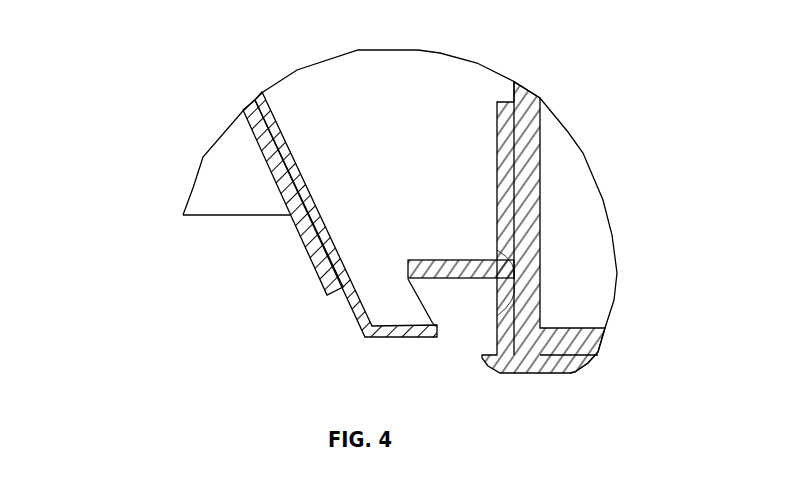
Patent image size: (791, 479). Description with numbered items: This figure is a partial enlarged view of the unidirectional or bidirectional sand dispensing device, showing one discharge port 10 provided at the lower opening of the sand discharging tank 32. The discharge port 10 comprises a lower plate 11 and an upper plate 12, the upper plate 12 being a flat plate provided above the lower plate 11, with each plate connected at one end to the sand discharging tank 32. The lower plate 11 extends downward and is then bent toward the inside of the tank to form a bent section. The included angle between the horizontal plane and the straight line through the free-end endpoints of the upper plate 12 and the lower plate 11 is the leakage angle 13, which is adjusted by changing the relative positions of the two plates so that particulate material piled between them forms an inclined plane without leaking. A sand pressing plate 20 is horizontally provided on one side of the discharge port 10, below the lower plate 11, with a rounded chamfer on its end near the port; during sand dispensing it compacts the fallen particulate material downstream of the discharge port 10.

The discharge port 10 is at (277, 201).
The lower plate 11 is at (272, 214).
The upper plate 12 is at (310, 172).
The leakage angle 13 is at (265, 211).
The sand pressing plate 20 is at (575, 227).
The sand discharging tank 32 is at (400, 191).